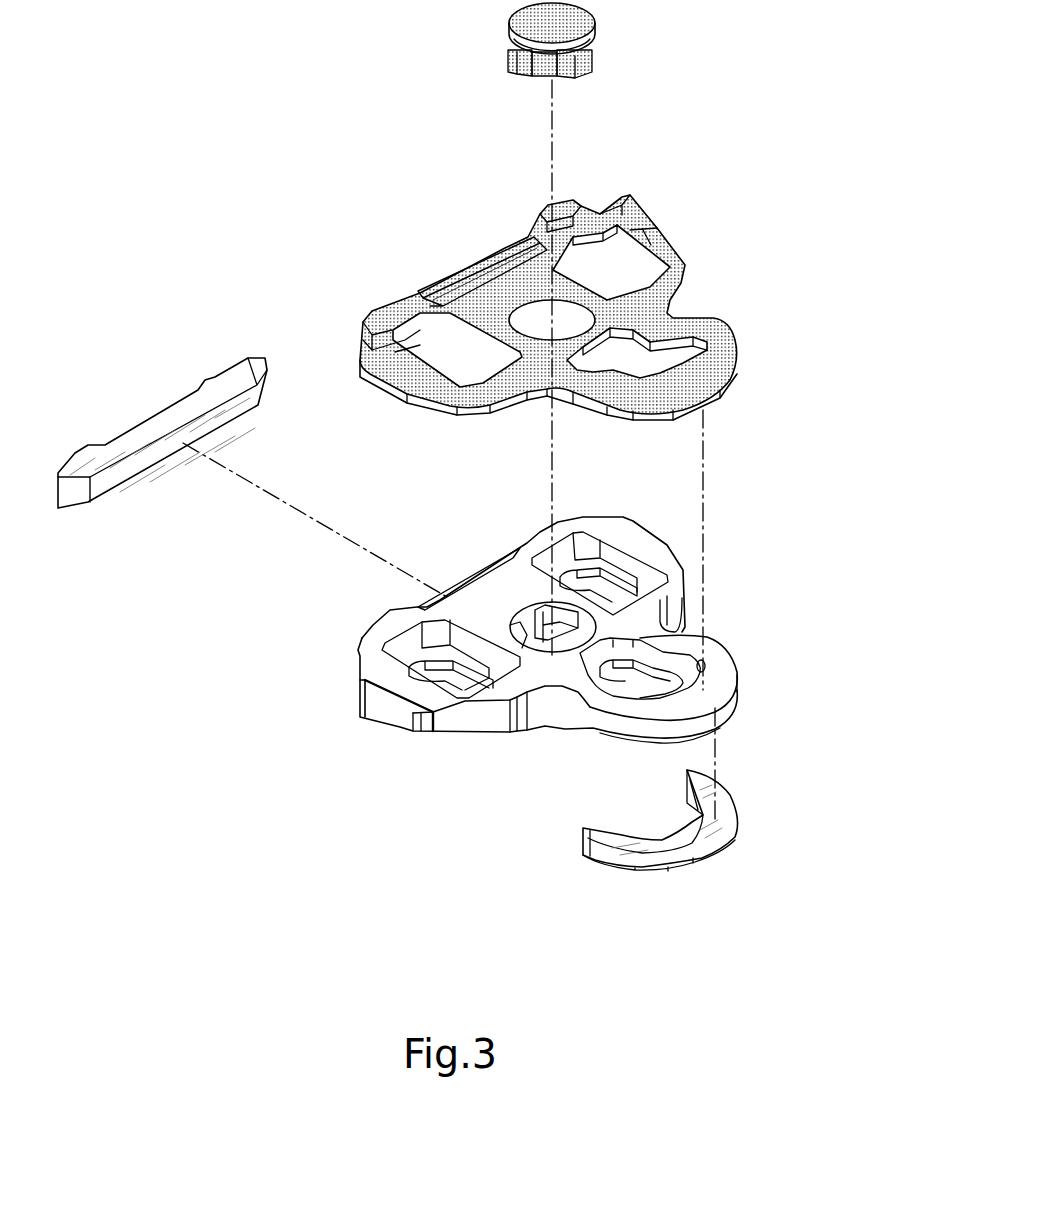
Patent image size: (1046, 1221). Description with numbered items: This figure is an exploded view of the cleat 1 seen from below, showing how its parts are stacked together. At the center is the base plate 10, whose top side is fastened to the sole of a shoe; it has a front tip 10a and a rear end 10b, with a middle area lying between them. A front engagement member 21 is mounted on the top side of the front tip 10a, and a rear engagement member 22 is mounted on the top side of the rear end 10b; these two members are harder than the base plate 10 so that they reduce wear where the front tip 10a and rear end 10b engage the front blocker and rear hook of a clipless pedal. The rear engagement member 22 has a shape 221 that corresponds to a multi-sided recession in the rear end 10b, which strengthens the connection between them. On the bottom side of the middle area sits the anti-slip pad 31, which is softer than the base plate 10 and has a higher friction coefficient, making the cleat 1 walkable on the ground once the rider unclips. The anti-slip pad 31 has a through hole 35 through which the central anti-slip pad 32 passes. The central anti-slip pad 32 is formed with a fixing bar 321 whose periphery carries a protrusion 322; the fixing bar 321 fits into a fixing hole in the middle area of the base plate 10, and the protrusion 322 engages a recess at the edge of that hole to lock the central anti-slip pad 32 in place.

The cleat 1 is at (463, 503).
The base plate 10 is at (603, 645).
The front tip 10a is at (727, 703).
The rear end 10b is at (480, 572).
The front engagement member 21 is at (688, 848).
The rear engagement member 22 is at (162, 458).
The shape 221 is at (85, 500).
The anti-slip pad 31 is at (605, 309).
The central anti-slip pad 32 is at (543, 100).
The fixing bar 321 is at (538, 74).
The protrusion 322 is at (590, 72).
The through hole 35 is at (533, 308).